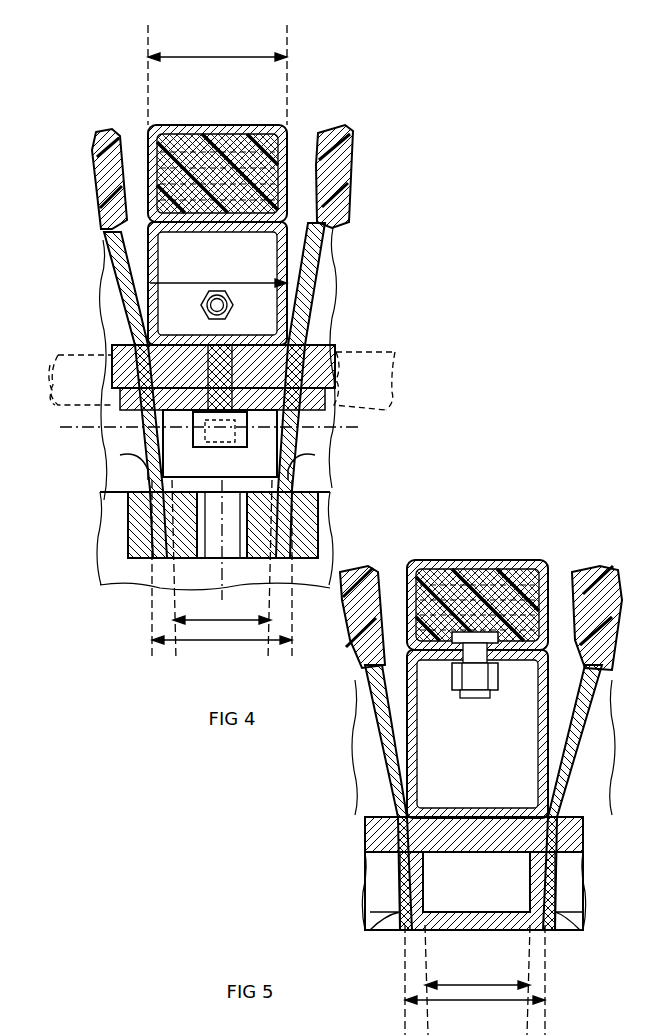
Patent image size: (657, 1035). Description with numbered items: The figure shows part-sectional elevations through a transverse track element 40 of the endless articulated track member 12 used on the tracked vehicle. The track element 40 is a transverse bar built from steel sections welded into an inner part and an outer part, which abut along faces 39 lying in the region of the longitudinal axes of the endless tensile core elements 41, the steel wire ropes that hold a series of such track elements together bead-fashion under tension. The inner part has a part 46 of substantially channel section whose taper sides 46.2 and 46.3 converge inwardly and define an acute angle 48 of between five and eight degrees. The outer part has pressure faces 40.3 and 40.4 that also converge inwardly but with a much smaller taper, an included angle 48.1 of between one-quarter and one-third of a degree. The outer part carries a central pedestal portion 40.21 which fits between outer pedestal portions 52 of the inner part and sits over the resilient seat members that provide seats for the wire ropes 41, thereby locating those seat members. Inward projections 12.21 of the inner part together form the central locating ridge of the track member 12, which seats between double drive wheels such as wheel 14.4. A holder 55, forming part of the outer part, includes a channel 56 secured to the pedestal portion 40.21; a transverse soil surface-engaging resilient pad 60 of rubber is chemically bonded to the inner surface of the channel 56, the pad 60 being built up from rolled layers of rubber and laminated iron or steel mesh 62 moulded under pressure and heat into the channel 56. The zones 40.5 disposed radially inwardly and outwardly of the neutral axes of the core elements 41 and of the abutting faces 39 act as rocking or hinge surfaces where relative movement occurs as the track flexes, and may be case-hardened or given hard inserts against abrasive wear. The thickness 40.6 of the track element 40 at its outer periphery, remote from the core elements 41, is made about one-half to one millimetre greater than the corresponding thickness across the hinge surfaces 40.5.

In FIG. 4, the endless articulated track member 12 is at (363, 126).
In FIG. 5, the endless articulated track member 12 is at (428, 546).
In FIG. 4, the inward projection 12.21 is at (166, 564).
In FIG. 4, the double wheel 14.4 is at (132, 586).
In FIG. 4, the abutting face 39 is at (106, 399).
In FIG. 4, the transverse track element 40 is at (101, 125).
In FIG. 5, the transverse track element 40 is at (364, 556).
In FIG. 4, the central pedestal portion 40.21 is at (152, 267).
In FIG. 4, the pressure face 40.3 is at (302, 260).
In FIG. 5, the pressure face 40.3 is at (552, 727).
In FIG. 4, the pressure face 40.4 is at (148, 283).
In FIG. 5, the pressure face 40.4 is at (404, 723).
In FIG. 4, the rocking or hinge surface zone 40.5 is at (141, 376).
In FIG. 4, the thickness of track element 40.6 is at (228, 57).
In FIG. 4, the endless tensile core element 41 is at (58, 358).
In FIG. 4, the channel section part 46 is at (112, 432).
In FIG. 5, the channel section part 46 is at (383, 874).
In FIG. 4, the taper side 46.2 is at (126, 471).
In FIG. 5, the taper side 46.2 is at (400, 881).
In FIG. 4, the taper side 46.3 is at (300, 460).
In FIG. 5, the taper side 46.3 is at (546, 894).
In FIG. 4, the acute angle 48 is at (247, 605).
In FIG. 5, the acute angle 48 is at (499, 983).
In FIG. 4, the included angle 48.1 is at (240, 300).
In FIG. 5, the included angle 48.1 is at (488, 1000).
In FIG. 5, the outer pedestal portion 52 is at (421, 781).
In FIG. 4, the holder 55 is at (122, 168).
In FIG. 4, the channel 56 is at (292, 230).
In FIG. 5, the channel 56 is at (407, 611).
In FIG. 4, the resilient pad 60 is at (100, 133).
In FIG. 5, the resilient pad 60 is at (479, 562).
In FIG. 4, the reinforcing mesh 62 is at (243, 128).
In FIG. 5, the reinforcing mesh 62 is at (499, 565).